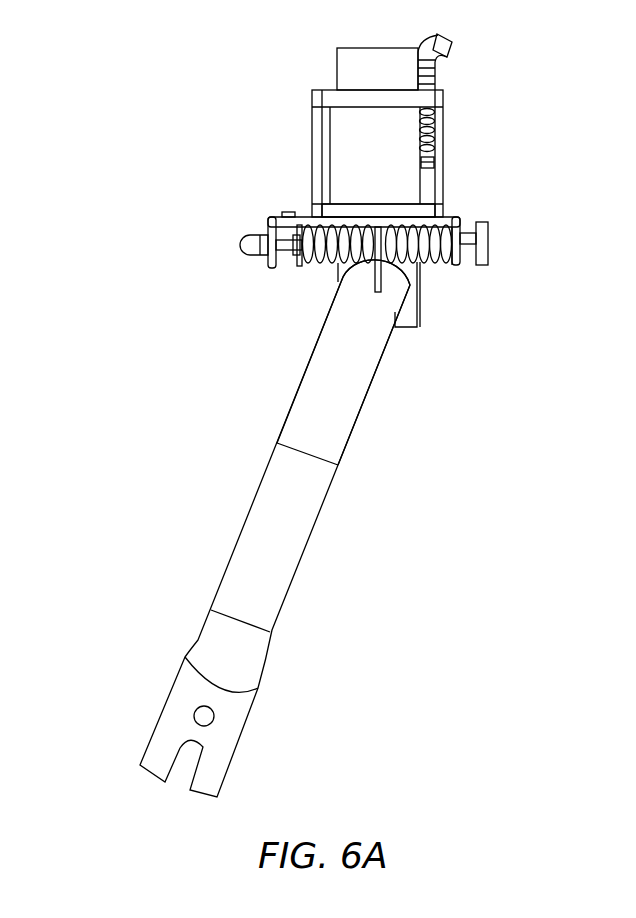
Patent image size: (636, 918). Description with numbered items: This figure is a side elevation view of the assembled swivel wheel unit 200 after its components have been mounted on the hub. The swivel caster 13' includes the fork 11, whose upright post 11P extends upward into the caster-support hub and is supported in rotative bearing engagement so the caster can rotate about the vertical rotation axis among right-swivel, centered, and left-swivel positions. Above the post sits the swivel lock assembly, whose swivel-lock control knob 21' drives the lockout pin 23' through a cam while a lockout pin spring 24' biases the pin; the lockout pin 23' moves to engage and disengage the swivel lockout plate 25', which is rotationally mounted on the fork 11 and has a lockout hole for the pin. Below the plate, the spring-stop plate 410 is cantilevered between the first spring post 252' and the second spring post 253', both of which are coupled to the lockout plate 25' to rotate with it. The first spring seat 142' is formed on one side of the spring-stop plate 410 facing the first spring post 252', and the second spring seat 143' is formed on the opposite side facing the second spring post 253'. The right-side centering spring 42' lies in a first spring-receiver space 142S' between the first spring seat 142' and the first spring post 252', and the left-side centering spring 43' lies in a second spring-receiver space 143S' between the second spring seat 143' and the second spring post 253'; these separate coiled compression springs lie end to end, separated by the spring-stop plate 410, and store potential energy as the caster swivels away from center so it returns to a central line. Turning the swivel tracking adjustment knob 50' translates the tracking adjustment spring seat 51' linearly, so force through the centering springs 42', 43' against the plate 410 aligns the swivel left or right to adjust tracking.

The tool assembly 200 is at (203, 132).
The upright post 11P is at (337, 77).
The swivel-lock control knob 21' is at (428, 140).
The lockout pin spring 24' is at (477, 126).
The lockout pin 23' is at (471, 165).
The swivel lockout plate 25' is at (451, 192).
The swivel tracking adjustment knob 50' is at (518, 242).
The tracking adjustment spring seat 51' is at (238, 213).
The first spring post 252' is at (221, 257).
The second spring post 253' is at (538, 247).
The right-side centering spring 42' is at (295, 273).
The left spring seat 142S' is at (260, 308).
The first spring seat 142' is at (319, 321).
The left-side centering spring 43' is at (457, 271).
The right spring seat 143S' is at (525, 265).
The second spring seat 143' is at (447, 300).
The spring-stop plate 410 is at (384, 301).
The swivel caster 13' is at (365, 373).
The fork 11 is at (279, 572).